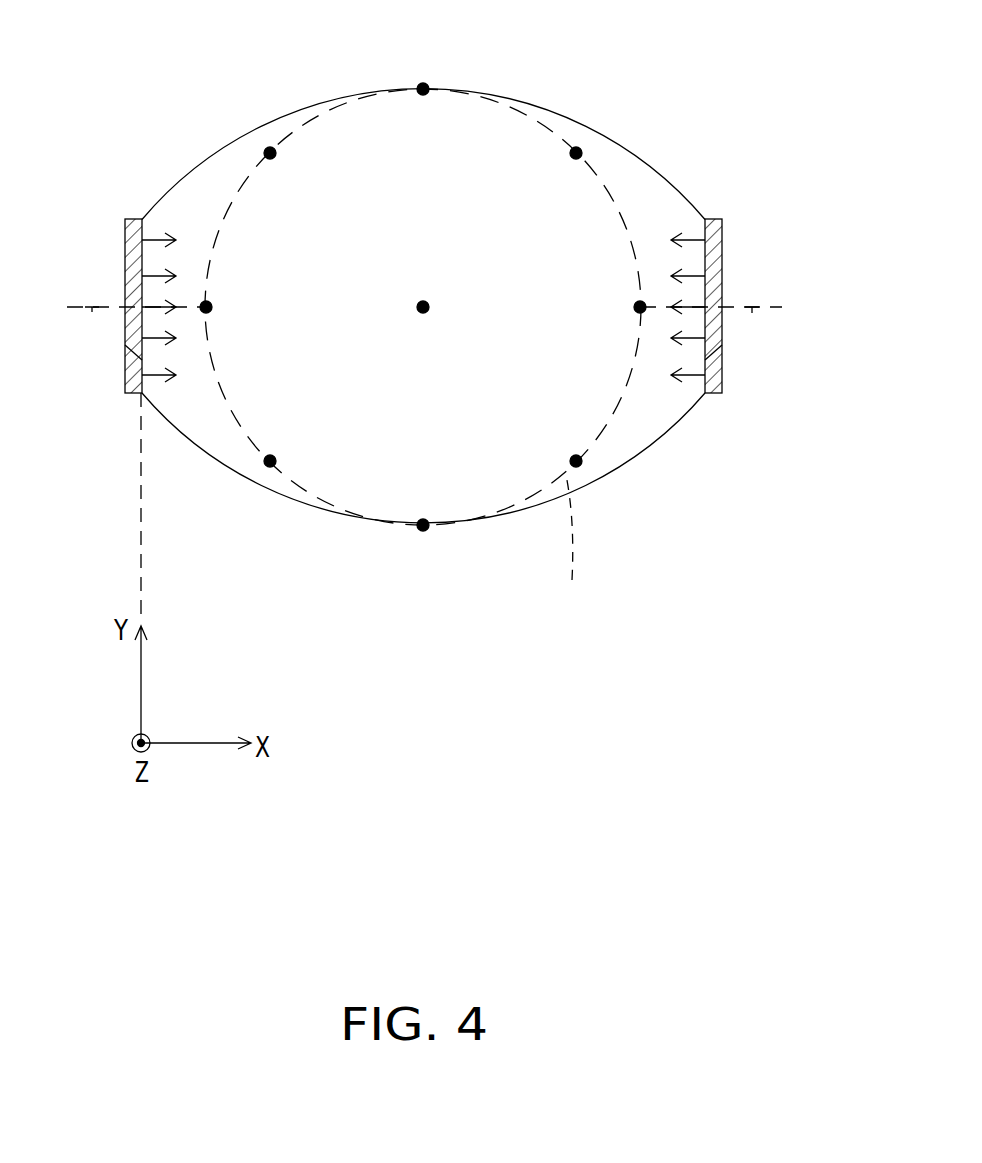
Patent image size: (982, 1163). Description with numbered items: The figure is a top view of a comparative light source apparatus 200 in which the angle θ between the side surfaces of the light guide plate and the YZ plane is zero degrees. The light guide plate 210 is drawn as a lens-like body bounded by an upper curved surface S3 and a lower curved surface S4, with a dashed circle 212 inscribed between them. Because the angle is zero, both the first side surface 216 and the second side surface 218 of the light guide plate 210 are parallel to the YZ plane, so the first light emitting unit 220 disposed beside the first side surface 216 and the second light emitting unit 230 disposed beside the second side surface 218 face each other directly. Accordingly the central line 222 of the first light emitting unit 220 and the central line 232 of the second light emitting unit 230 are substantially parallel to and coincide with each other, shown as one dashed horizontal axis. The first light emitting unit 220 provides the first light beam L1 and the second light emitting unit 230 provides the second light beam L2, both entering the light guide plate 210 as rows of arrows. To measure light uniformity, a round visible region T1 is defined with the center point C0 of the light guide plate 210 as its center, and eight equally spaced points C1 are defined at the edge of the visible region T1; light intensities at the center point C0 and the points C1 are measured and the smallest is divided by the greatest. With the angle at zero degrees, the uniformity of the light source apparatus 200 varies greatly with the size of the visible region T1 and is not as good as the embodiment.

The light source apparatus 200 is at (773, 743).
The light guide plate 210 is at (423, 334).
The circular reference / inscribed circle 212 is at (197, 210).
The first side surface 216 is at (127, 354).
The second side surface 218 is at (718, 351).
The first light emitting unit 220 is at (125, 290).
The central line 222 is at (92, 312).
The second light emitting unit 230 is at (715, 258).
The central line 232 is at (752, 313).
The third surface (top curved surface) S3 is at (600, 131).
The fourth surface (bottom curved surface) S4 is at (293, 505).
The center point C0 is at (425, 312).
The points C1 is at (424, 86).
The visible region T1 is at (569, 549).
The first light beam L1 is at (158, 376).
The second light beam L2 is at (695, 377).